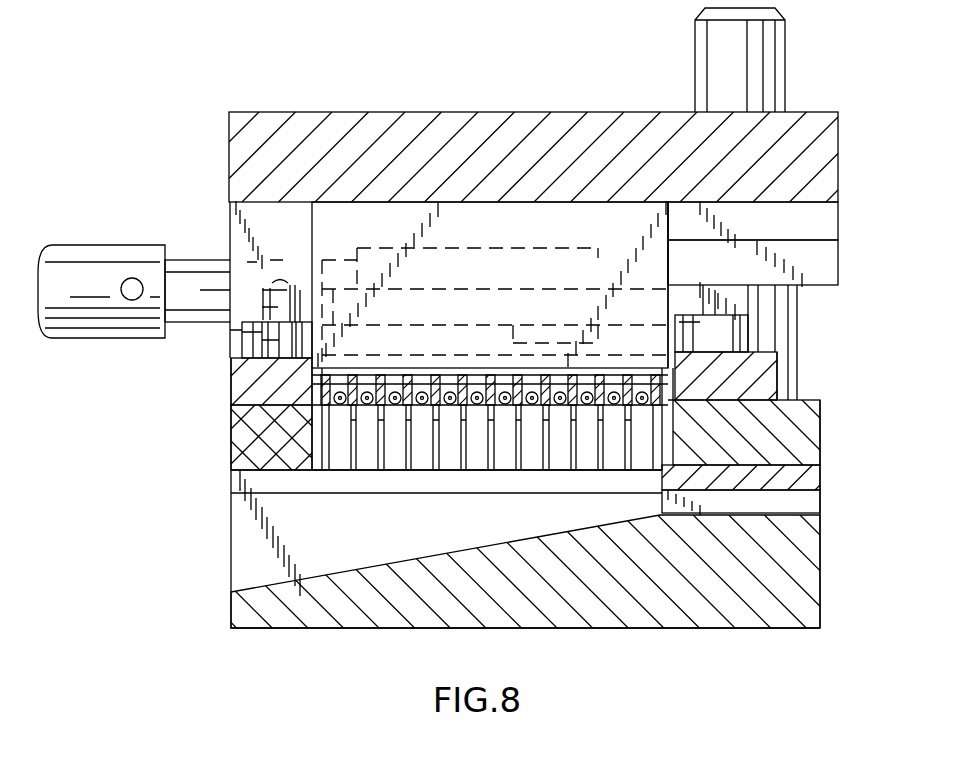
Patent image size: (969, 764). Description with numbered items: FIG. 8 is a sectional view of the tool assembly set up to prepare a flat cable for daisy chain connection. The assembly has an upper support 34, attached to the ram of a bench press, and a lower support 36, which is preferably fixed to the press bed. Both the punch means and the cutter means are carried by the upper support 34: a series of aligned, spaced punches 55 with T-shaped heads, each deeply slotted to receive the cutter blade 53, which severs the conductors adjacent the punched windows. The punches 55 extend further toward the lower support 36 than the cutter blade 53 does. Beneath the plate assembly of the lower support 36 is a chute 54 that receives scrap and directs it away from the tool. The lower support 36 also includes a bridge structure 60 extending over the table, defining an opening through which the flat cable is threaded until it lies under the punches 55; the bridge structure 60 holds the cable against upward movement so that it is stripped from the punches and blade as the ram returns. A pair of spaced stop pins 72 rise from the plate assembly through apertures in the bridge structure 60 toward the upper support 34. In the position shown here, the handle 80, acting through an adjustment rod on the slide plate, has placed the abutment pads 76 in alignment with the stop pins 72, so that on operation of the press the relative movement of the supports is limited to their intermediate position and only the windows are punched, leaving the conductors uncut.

The upper support 34 is at (440, 130).
The lower support 36 is at (248, 608).
The cutter blade 53 is at (382, 335).
The chute 54 is at (272, 538).
The punches 55 is at (330, 440).
The bridge structure 60 is at (330, 385).
The stop pins 72 is at (260, 343).
The abutment pads 76 is at (218, 322).
The handle 80 is at (64, 330).